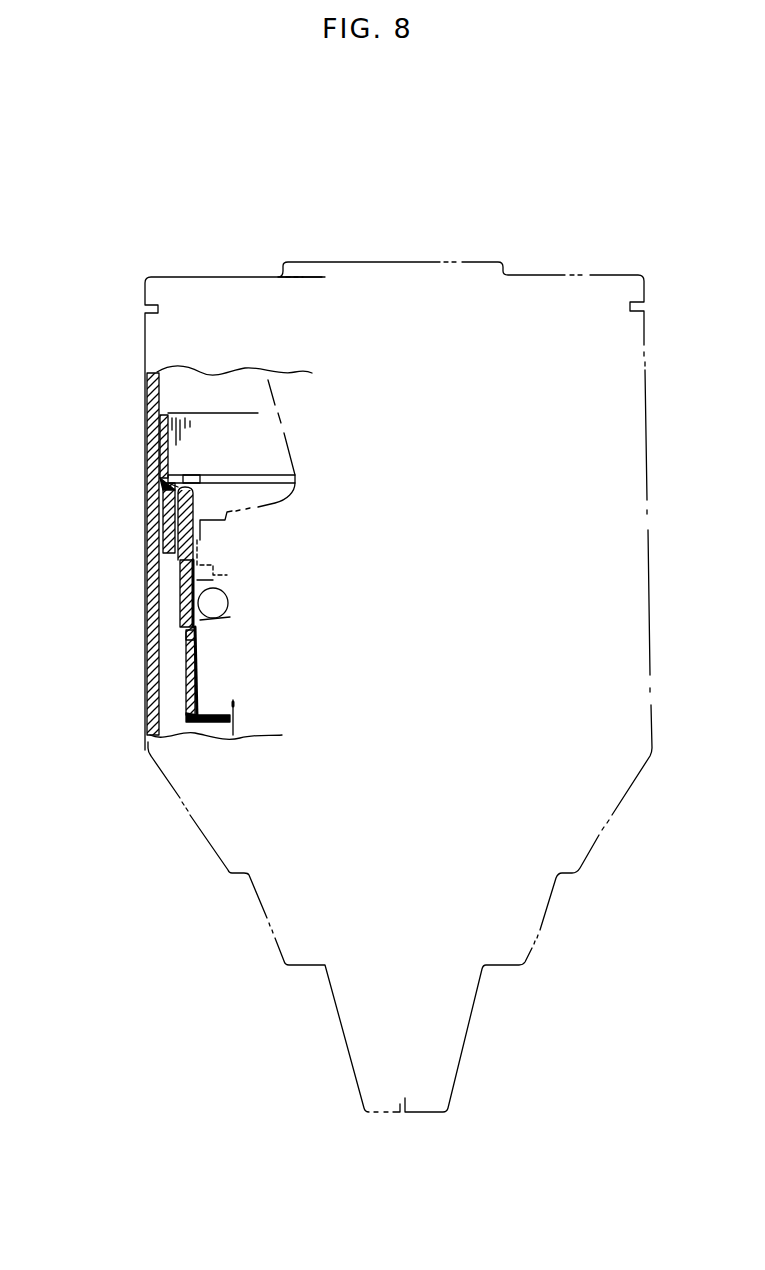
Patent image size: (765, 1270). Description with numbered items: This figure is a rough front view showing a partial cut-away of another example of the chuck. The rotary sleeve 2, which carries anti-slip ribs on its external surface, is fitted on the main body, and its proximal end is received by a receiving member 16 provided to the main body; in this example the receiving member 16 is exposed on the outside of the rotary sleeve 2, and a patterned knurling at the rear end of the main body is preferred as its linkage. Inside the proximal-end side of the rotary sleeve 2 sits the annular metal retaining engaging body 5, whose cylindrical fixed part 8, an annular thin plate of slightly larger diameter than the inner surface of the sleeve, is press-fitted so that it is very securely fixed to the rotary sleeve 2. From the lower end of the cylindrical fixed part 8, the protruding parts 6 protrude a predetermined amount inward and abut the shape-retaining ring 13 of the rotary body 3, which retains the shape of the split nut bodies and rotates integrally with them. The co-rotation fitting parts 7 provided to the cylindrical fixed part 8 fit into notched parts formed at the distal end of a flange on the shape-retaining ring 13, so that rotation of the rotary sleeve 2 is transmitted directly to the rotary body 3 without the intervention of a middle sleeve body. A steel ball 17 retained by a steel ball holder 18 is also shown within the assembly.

The receiving member 16 is at (144, 276).
The rotary sleeve 2 is at (145, 388).
The cylindrical fixed part 8 is at (174, 420).
The protruding parts 6 is at (192, 475).
The retaining engaging body 5 is at (160, 478).
The co-rotation fitting parts 7 is at (158, 521).
The steel ball holder 18 is at (197, 582).
The steel ball 17 is at (193, 626).
The shape-retaining ring 13 is at (188, 683).
The rotary body 3 is at (180, 716).